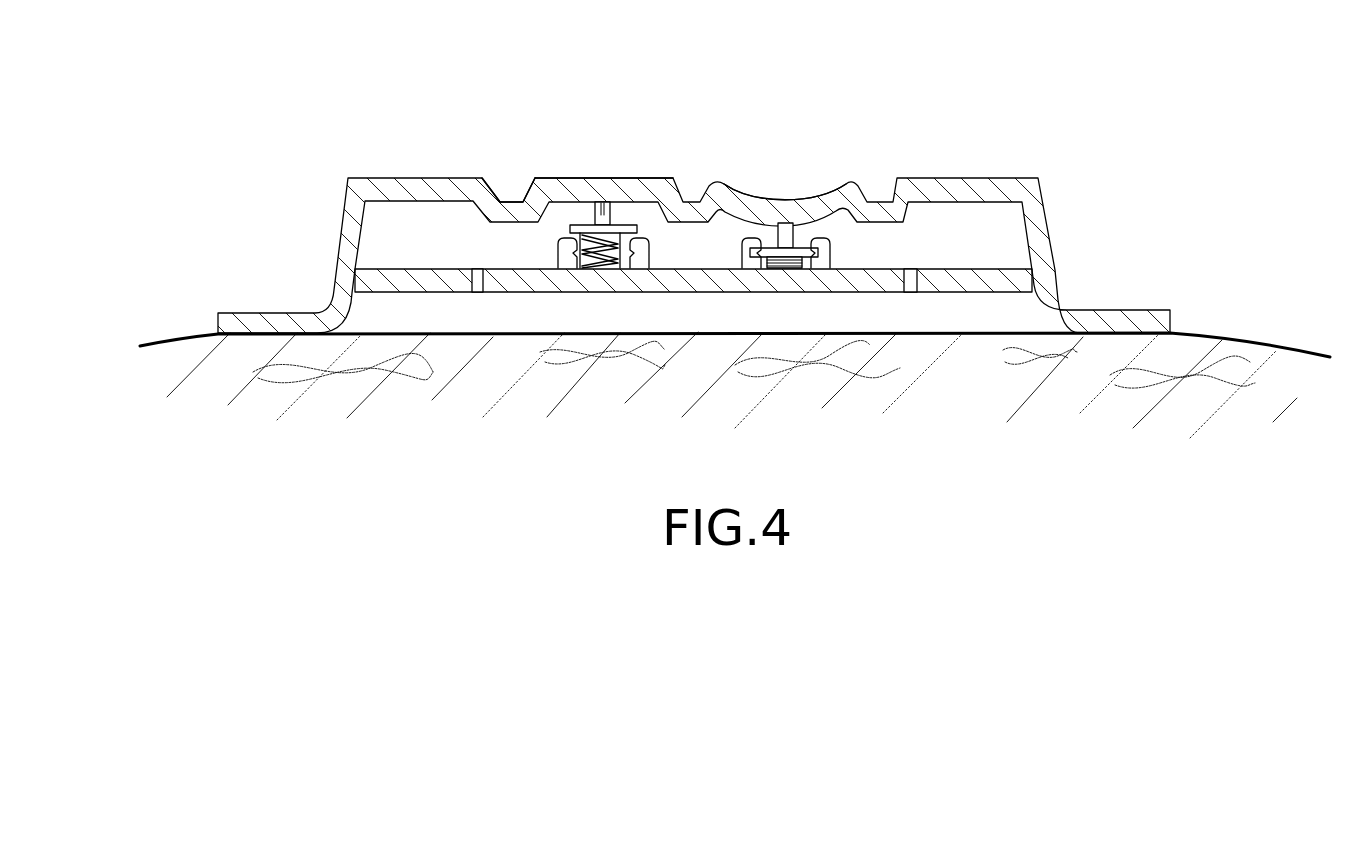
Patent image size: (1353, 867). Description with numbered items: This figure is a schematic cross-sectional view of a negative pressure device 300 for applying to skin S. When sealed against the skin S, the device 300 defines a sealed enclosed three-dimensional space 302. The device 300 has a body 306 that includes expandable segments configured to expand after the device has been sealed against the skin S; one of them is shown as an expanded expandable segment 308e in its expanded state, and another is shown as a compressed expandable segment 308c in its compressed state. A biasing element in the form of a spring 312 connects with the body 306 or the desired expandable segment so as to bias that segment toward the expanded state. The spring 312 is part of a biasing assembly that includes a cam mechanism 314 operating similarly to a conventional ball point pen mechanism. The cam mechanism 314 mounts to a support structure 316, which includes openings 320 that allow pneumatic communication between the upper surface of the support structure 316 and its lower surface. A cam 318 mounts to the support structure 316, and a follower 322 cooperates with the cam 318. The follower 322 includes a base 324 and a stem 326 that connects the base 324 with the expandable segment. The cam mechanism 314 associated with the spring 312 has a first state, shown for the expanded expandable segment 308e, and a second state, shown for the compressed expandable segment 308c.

The negative pressure device 300 is at (735, 245).
The sealed enclosed three-dimensional space 302 is at (628, 282).
The body 306 is at (694, 211).
The expanded expandable segment 308e is at (587, 178).
The compressed expandable segment 308c is at (785, 200).
The spring 312 is at (607, 270).
The cam mechanism 314 is at (553, 253).
The support structure 316 is at (693, 372).
The cam 318 is at (638, 242).
The openings 320 is at (477, 293).
The follower 322 is at (572, 213).
The base 324 is at (581, 237).
The stem 326 is at (603, 208).
The skin S is at (1267, 338).